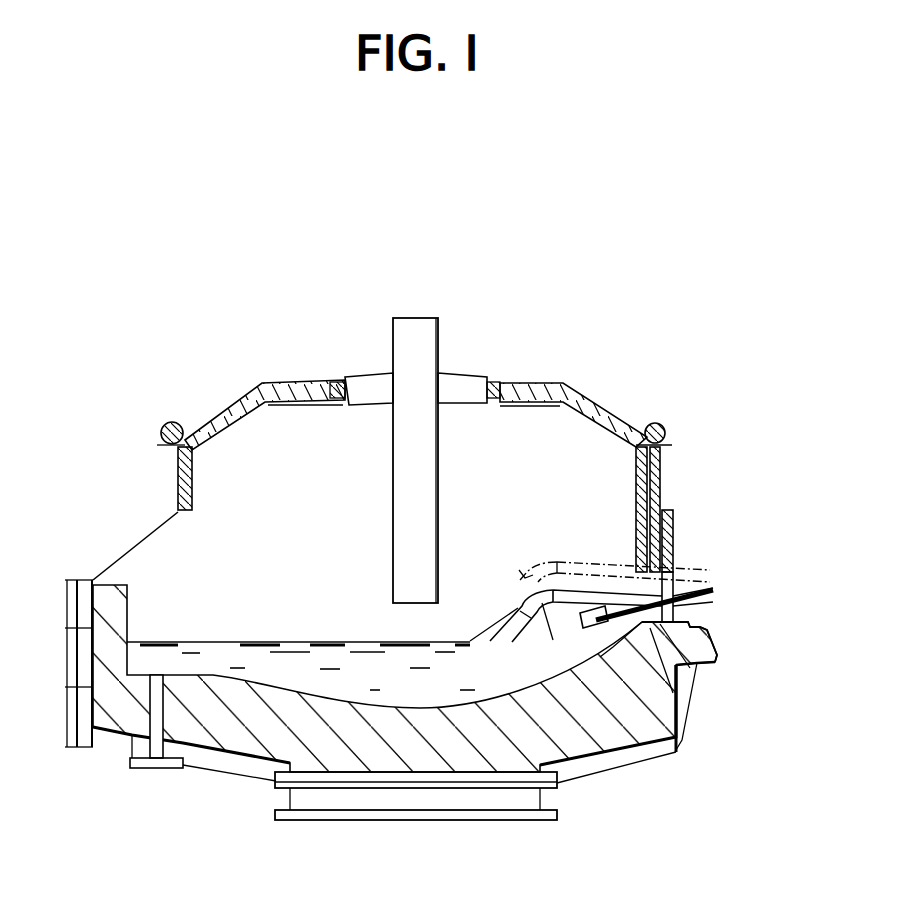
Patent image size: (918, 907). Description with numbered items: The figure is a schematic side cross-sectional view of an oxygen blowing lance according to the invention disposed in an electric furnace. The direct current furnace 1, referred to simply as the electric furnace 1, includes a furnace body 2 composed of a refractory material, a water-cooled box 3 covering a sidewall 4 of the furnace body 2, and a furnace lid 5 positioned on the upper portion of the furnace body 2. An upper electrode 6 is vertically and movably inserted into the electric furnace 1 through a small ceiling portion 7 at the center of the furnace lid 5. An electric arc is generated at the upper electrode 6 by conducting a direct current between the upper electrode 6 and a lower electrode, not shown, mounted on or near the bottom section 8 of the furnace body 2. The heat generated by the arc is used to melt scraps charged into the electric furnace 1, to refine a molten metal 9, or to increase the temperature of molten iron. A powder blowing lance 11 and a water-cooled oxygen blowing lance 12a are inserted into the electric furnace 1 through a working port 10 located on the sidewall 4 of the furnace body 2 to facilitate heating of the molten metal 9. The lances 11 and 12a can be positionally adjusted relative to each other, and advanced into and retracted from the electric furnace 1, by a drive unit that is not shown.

The direct current furnace 1 is at (626, 383).
The furnace body 2 is at (655, 458).
The water-cooled box 3 is at (673, 530).
The sidewall 4 is at (661, 488).
The furnace lid 5 is at (538, 378).
The upper electrode 6 is at (392, 333).
The small ceiling portion 7 is at (440, 375).
The bottom section 8 is at (233, 728).
The molten metal 9 is at (211, 652).
The working port 10 is at (713, 597).
The powder blowing lance 11 is at (677, 705).
The water-cooled oxygen blowing lance 12a is at (543, 600).